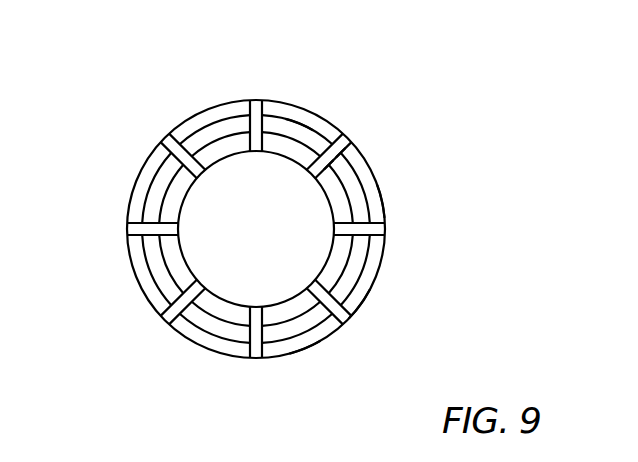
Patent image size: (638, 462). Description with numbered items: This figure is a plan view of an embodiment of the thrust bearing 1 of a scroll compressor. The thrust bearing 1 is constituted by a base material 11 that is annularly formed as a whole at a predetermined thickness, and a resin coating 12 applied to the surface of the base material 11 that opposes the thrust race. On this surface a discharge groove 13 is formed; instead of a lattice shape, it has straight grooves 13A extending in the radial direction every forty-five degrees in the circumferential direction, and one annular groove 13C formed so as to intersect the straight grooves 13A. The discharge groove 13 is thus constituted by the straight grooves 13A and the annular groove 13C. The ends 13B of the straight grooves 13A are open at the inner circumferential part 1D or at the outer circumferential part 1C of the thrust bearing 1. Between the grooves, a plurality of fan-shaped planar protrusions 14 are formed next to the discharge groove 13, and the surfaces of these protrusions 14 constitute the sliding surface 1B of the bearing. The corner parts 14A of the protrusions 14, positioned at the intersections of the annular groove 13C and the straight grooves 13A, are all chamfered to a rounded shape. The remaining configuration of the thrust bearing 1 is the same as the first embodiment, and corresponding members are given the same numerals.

The thrust bearing 1 is at (395, 175).
The sliding surface 1B is at (308, 353).
The outer circumferential part 1C is at (385, 202).
The inner circumferential part 1D is at (323, 268).
The base material 11 is at (332, 120).
The resin coating 12 is at (362, 305).
The discharge groove 13 is at (260, 97).
The straight grooves 13A is at (145, 153).
The ends of straight grooves 13B is at (168, 150).
The annular groove 13C is at (297, 130).
The fan-shaped planar protrusions 14 is at (203, 122).
The corner parts 14A is at (338, 157).